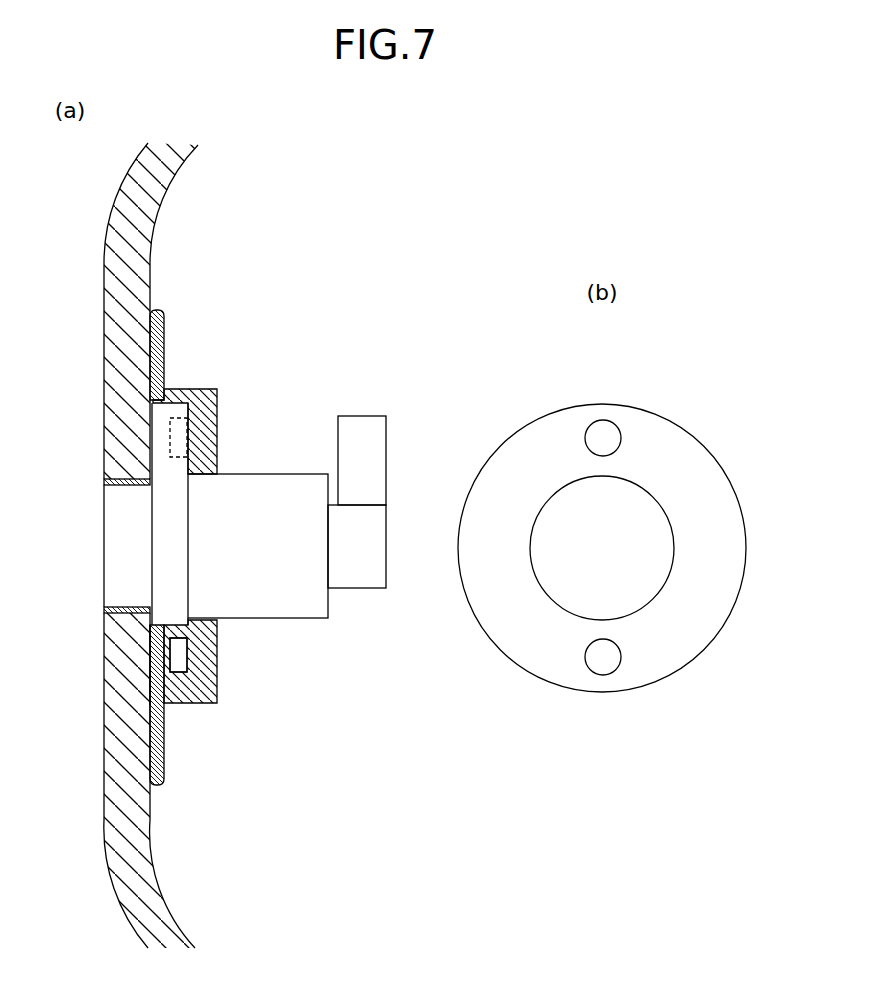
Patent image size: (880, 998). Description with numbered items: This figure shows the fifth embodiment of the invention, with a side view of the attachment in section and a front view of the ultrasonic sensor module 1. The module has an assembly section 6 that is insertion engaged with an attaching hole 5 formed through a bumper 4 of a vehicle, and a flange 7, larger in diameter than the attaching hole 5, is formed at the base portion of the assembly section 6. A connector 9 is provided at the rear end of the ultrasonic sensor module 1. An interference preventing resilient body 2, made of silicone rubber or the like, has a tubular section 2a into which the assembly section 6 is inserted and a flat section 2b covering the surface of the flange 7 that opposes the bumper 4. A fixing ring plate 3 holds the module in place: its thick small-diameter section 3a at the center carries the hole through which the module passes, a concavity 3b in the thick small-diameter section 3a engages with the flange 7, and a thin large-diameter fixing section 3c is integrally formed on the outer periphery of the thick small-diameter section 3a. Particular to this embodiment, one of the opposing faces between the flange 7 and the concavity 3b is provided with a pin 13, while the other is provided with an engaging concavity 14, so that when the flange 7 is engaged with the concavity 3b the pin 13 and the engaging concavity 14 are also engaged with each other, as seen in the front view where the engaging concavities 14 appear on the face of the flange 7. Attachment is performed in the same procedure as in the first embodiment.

The ultrasonic sensor module 1 is at (302, 478).
The interference preventing resilient body 2 is at (105, 482).
The tubular section 2a is at (122, 606).
The flat section 2b is at (150, 667).
The fixing ring plate 3 is at (217, 547).
The thick small-diameter section 3a is at (212, 424).
The concavity 3b is at (176, 408).
The thin large-diameter fixing section 3c is at (166, 752).
The bumper 4 is at (117, 335).
The attaching hole 5 is at (120, 632).
The assembly section 6 is at (122, 537).
The flange 7 is at (192, 683).
The connector 9 is at (368, 445).
The pin 13 is at (182, 443).
The engaging concavity 14 is at (175, 436).